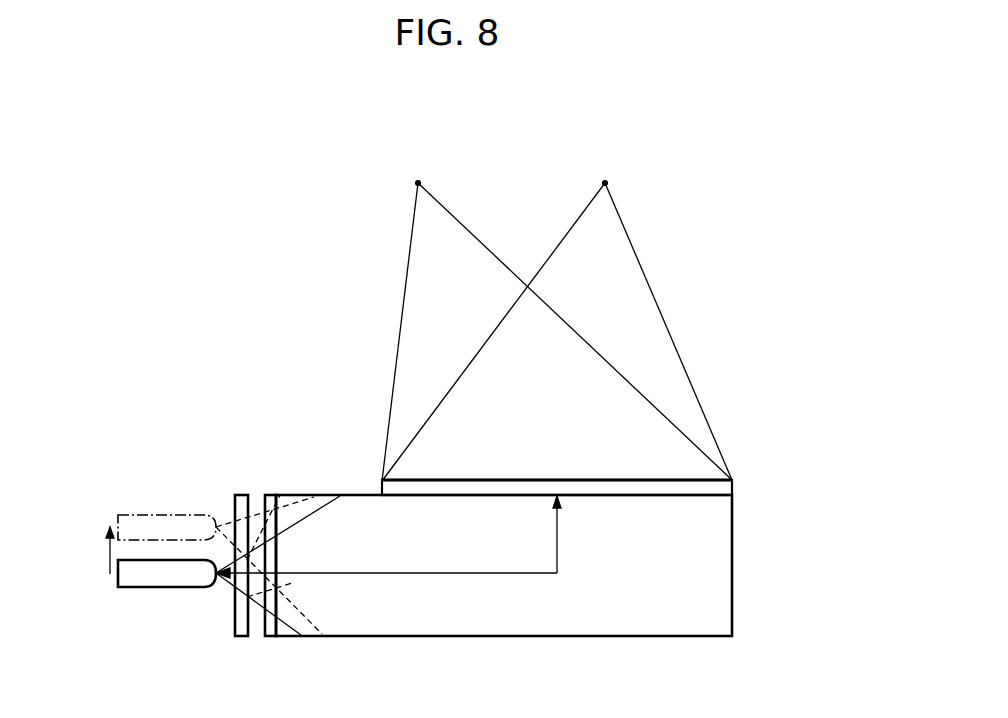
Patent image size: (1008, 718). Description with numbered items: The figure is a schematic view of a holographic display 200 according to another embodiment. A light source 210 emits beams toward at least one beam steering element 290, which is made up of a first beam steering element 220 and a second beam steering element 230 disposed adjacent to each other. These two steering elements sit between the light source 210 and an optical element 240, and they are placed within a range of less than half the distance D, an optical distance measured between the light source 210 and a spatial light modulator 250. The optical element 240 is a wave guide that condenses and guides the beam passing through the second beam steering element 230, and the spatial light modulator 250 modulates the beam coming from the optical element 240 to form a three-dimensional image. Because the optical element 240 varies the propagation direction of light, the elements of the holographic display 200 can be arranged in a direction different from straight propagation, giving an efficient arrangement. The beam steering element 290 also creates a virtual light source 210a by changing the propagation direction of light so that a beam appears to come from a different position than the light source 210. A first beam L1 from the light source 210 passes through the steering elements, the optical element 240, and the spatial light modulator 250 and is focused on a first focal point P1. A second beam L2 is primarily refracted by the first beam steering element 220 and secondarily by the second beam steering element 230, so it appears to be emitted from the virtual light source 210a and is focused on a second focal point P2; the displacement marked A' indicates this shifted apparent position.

The holographic display 200 is at (210, 339).
The light source 210 is at (163, 589).
The virtual light source 210a is at (167, 514).
The first beam steering element 220 is at (240, 494).
The second beam steering element 230 is at (286, 541).
The optical element 240 is at (733, 571).
The spatial light modulator 250 is at (733, 487).
The beam steering element 290 is at (265, 519).
The first focal point P1 is at (557, 316).
The second focal point P2 is at (557, 316).
The first beam L1 is at (287, 628).
The second beam L2 is at (295, 503).
The distance D is at (388, 546).
The shift direction A' is at (99, 550).